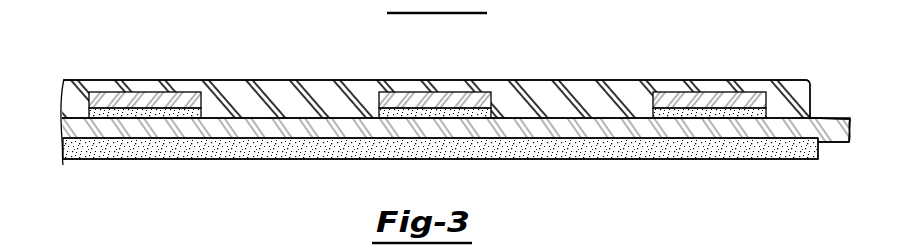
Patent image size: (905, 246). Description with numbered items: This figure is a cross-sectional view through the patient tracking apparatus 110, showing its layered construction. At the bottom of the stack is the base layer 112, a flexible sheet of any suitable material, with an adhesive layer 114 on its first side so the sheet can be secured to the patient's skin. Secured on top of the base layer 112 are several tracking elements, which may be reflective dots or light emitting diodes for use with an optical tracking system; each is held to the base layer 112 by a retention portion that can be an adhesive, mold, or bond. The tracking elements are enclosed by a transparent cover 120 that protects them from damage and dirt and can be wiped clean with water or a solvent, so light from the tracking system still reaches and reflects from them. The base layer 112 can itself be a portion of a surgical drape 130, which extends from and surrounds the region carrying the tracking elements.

The patient tracking apparatus 110 is at (61, 80).
The base layer 112 is at (175, 130).
The adhesive layer 114 is at (243, 152).
The cover 120 is at (337, 88).
The surgical drape 130 is at (828, 122).